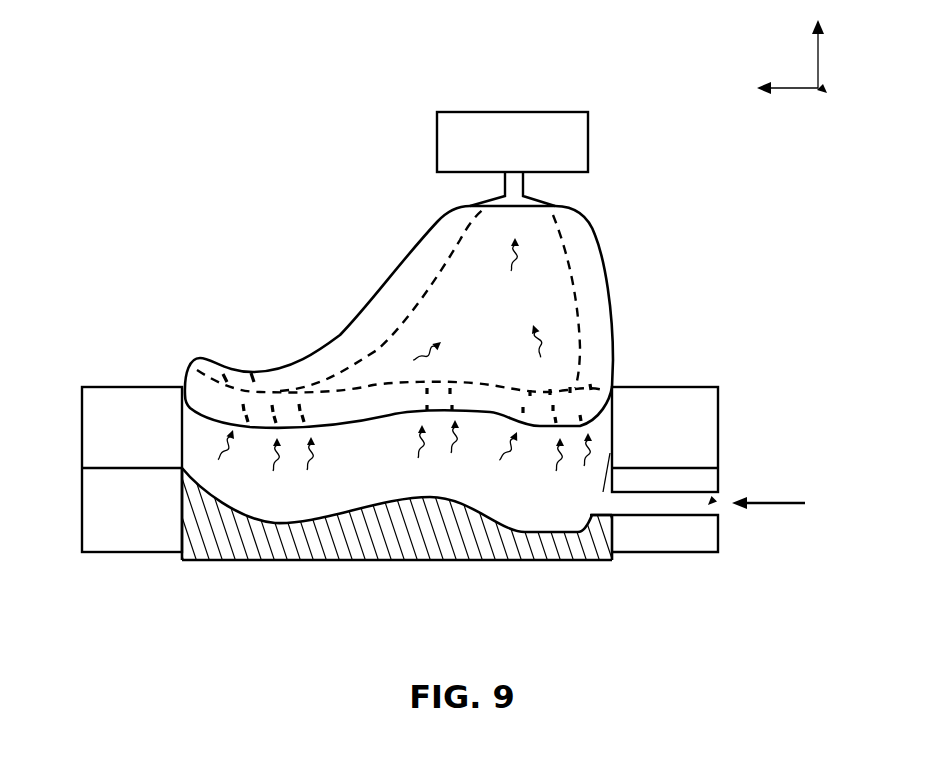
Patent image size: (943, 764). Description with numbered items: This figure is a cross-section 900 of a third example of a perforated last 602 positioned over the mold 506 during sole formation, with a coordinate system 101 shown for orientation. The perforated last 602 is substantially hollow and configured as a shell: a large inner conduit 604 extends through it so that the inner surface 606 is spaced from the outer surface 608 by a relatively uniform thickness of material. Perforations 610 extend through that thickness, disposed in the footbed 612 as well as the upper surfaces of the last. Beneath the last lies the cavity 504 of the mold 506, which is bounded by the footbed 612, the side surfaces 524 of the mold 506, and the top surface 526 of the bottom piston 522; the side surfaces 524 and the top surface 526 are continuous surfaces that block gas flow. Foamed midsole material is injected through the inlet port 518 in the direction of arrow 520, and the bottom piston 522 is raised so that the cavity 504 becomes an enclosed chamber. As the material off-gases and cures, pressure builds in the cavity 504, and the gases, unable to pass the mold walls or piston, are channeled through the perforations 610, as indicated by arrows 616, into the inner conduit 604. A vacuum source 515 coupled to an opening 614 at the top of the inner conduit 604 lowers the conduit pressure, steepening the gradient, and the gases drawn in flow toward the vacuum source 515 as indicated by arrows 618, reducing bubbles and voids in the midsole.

The cross-section 900 is at (190, 80).
The coordinate system 101 is at (800, 36).
The vacuum source 515 is at (508, 111).
The opening 614 is at (497, 210).
The perforated last 602 is at (386, 272).
The footbed 612 is at (327, 428).
The inner conduit 604 is at (496, 337).
The inner surface 606 is at (443, 267).
The outer surface 608 is at (604, 257).
The perforations 610 is at (300, 408).
The arrows 618 is at (395, 374).
The arrows 616 is at (553, 462).
The mold 506 is at (76, 405).
The side surfaces 524 is at (182, 440).
The top surface 526 is at (342, 512).
The cavity 504 is at (375, 496).
The bottom piston 522 is at (360, 562).
The inlet port 518 is at (712, 500).
The arrow 520 is at (763, 505).